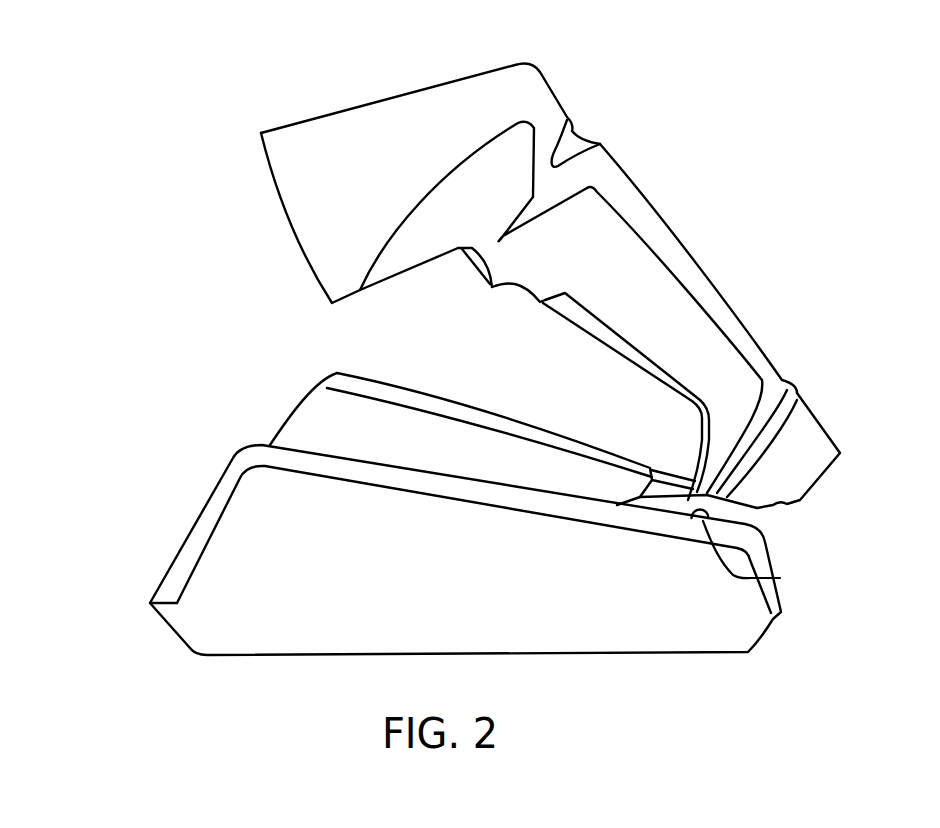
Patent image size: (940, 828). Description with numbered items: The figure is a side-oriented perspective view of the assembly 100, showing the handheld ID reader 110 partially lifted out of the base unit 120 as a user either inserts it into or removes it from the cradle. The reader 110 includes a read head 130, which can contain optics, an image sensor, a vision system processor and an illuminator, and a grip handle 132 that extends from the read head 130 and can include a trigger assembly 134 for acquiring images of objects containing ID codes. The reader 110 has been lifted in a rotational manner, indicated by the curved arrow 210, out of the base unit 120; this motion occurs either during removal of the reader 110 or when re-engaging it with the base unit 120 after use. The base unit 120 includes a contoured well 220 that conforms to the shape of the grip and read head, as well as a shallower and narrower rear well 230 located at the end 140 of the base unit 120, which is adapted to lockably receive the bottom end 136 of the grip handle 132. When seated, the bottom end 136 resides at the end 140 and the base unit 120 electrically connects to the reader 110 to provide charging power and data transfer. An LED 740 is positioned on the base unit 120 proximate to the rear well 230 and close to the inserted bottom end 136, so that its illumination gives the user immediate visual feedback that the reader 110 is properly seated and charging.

The assembly 100 is at (628, 90).
The handheld ID reader 110 is at (699, 316).
The base unit 120 is at (604, 624).
The read head 130 is at (383, 113).
The grip handle 132 is at (643, 250).
The trigger assembly 134 is at (485, 252).
The bottom end 136 is at (805, 468).
The end 140 is at (752, 517).
The curved arrow 210 is at (725, 247).
The contoured well 220 is at (370, 409).
The rear well 230 is at (672, 466).
The LED 740 is at (780, 578).